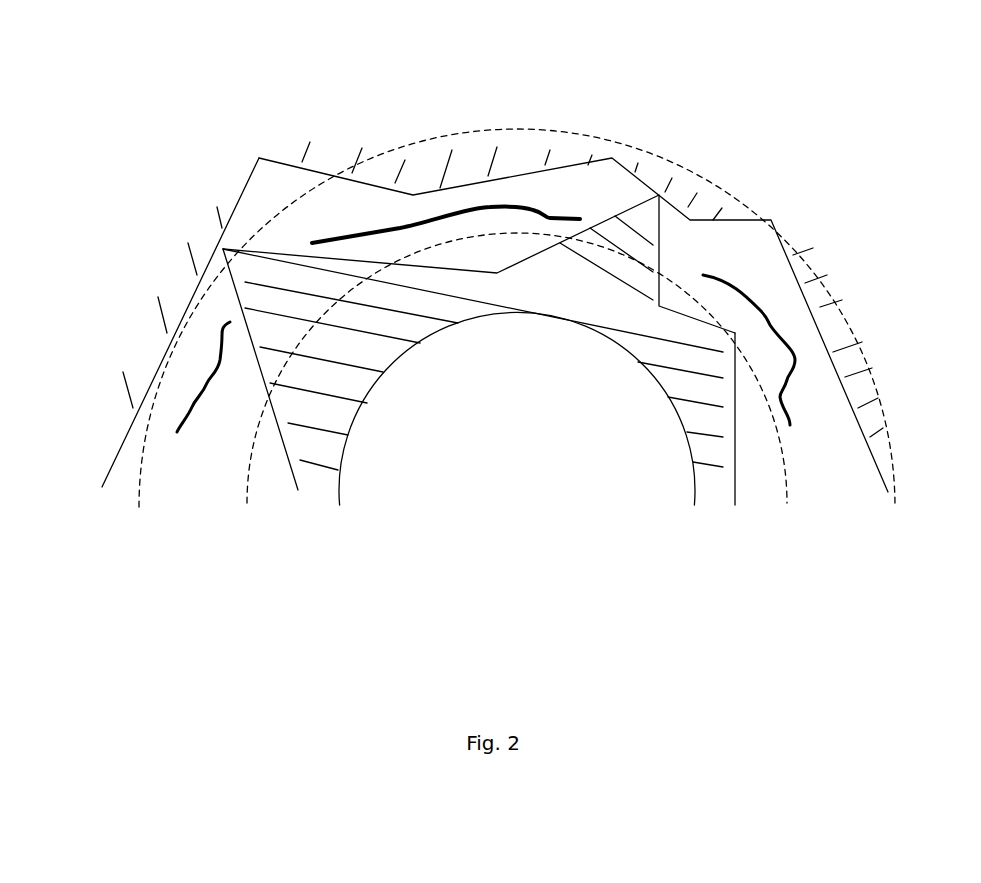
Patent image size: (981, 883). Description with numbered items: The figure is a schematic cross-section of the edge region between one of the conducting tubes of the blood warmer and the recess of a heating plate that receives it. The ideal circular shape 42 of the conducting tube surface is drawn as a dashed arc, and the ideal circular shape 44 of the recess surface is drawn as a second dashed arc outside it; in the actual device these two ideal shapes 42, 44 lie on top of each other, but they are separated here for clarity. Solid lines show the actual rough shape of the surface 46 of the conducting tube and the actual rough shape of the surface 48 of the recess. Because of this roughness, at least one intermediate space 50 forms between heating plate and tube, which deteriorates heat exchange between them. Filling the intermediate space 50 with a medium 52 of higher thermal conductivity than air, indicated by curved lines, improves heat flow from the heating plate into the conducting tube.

The ideal circular shape of the conducting tube surface 42 is at (758, 383).
The ideal circular shape of the recess surface 44 is at (727, 168).
The actual rough surface of the conducting tube 46 is at (282, 457).
The actual rough surface of the recess 48 is at (125, 422).
The intermediate space 50 is at (372, 219).
The medium 52 is at (782, 327).